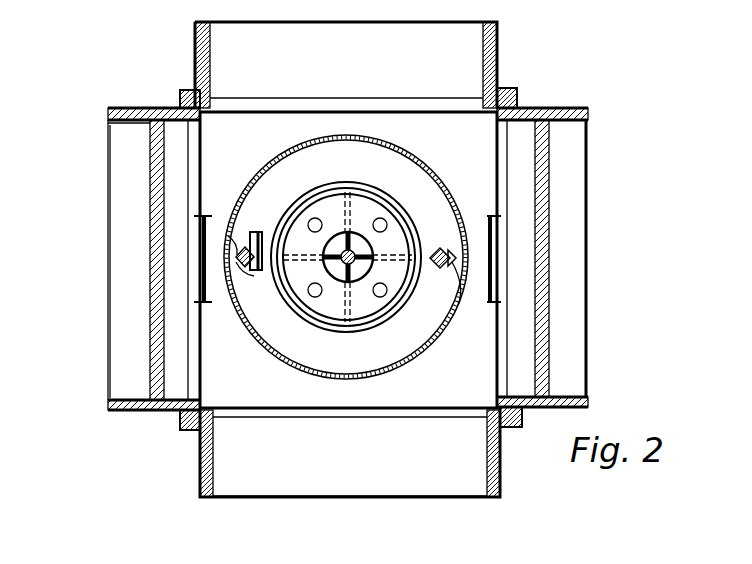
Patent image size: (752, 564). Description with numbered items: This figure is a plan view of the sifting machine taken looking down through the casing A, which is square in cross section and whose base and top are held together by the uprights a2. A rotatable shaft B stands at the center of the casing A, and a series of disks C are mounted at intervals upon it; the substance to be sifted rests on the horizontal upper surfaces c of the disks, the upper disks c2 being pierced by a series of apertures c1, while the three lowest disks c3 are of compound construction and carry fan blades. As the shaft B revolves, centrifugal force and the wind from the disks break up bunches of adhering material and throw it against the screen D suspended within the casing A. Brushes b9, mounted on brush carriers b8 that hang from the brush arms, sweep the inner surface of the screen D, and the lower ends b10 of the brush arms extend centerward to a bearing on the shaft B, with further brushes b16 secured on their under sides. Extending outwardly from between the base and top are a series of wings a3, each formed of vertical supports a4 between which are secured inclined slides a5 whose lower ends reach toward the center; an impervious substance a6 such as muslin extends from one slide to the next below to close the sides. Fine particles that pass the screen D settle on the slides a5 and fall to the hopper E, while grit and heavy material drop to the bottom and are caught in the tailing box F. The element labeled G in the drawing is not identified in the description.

The casing A is at (517, 92).
The rotatable shaft B is at (355, 252).
The disks C is at (445, 270).
The screen D is at (400, 287).
The hopper E is at (480, 328).
The tailing box F is at (357, 272).
The guide bracket G is at (217, 213).
The uprights a2 is at (183, 96).
The wings a3 is at (333, 498).
The vertical supports a4 is at (142, 112).
The inclined slides a5 is at (150, 128).
The impervious substance a6 is at (150, 150).
The brush carriers b8 is at (237, 262).
The brushes b9 is at (243, 254).
The lower ends of brush arms b10 is at (254, 276).
The brushes b16 is at (250, 226).
The horizontal upper surfaces c is at (357, 202).
The apertures c1 is at (383, 217).
The upper disks c2 is at (403, 233).
The lowest disks c3 is at (430, 222).